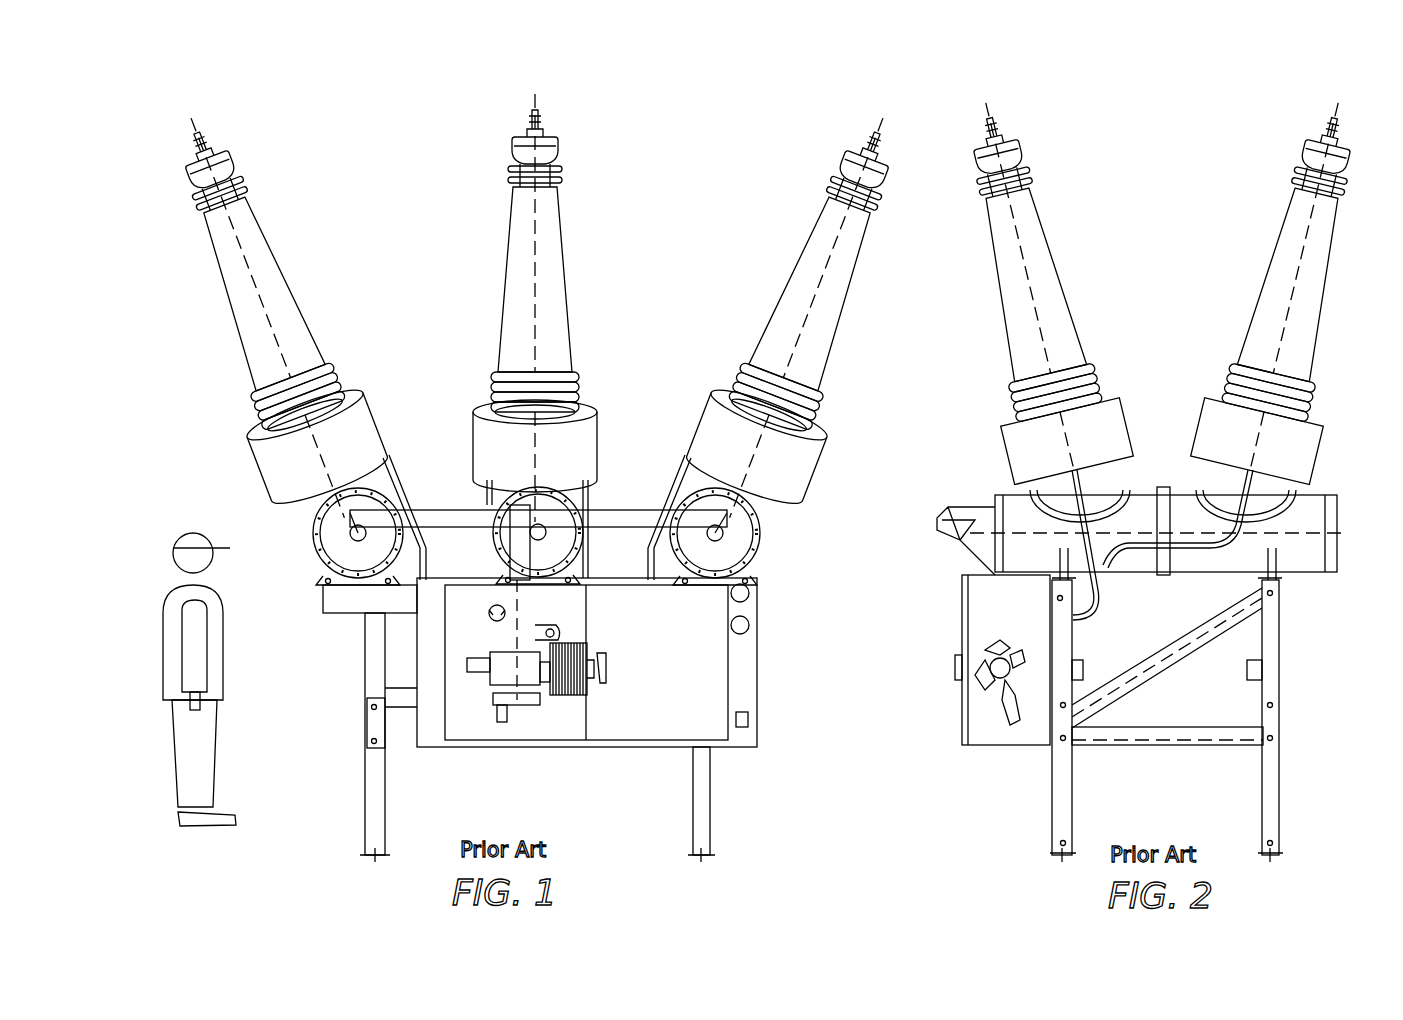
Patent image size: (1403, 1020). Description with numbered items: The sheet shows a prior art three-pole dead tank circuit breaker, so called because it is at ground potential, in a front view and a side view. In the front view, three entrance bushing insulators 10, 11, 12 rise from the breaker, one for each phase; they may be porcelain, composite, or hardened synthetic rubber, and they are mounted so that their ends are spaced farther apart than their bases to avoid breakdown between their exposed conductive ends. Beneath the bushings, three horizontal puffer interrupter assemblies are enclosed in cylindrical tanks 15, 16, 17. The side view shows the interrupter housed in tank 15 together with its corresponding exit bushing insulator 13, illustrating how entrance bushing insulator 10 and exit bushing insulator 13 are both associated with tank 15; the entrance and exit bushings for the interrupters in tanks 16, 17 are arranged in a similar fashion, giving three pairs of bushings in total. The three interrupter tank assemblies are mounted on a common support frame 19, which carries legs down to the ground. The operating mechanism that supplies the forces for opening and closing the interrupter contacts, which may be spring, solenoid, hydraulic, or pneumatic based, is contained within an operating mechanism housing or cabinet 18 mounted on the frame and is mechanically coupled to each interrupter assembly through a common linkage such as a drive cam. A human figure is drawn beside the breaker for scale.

In FIG. 1, the entrance bushing insulator 10 is at (268, 260).
In FIG. 2, the entrance bushing insulator 10 is at (1313, 280).
In FIG. 1, the entrance bushing insulator 11 is at (553, 255).
In FIG. 1, the entrance bushing insulator 12 is at (843, 275).
In FIG. 2, the exit bushing insulator 13 is at (1050, 277).
In FIG. 1, the cylindrical tank 15 is at (390, 485).
In FIG. 2, the cylindrical tank 15 is at (1147, 478).
In FIG. 1, the cylindrical tank 16 is at (573, 503).
In FIG. 1, the cylindrical tank 17 is at (762, 527).
In FIG. 1, the operating mechanism housing or cabinet 18 is at (678, 674).
In FIG. 2, the operating mechanism housing or cabinet 18 is at (978, 722).
In FIG. 1, the common support frame 19 is at (352, 794).
In FIG. 2, the common support frame 19 is at (1017, 808).